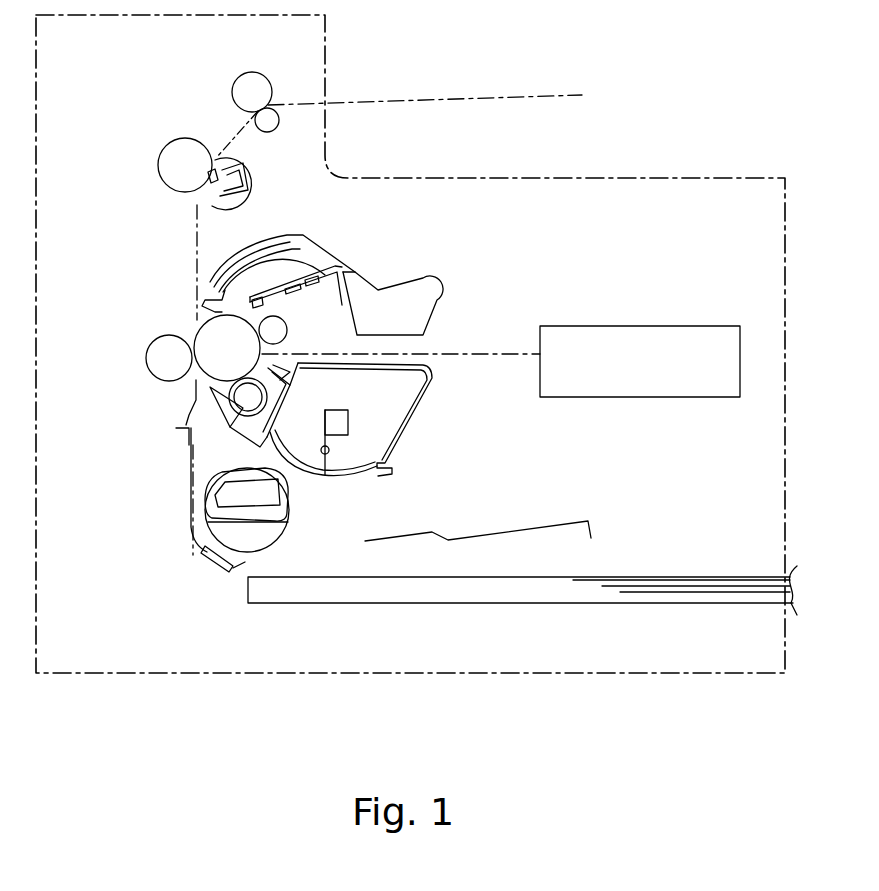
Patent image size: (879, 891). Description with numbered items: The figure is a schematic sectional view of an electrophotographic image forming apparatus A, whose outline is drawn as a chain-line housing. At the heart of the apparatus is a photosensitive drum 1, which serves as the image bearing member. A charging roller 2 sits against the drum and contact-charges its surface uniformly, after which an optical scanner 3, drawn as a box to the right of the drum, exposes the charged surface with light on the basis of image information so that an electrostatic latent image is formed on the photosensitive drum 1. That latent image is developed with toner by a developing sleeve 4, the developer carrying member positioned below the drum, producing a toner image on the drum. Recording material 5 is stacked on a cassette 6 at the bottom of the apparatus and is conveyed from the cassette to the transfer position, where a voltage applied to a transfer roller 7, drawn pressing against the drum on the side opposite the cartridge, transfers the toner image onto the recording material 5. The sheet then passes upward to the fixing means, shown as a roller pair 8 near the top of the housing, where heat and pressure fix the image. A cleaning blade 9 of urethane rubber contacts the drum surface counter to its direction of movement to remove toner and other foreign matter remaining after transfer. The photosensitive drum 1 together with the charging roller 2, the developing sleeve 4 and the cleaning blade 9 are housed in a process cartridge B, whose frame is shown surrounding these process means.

The electrophotographic image forming apparatus A is at (389, 52).
The process cartridge B is at (292, 338).
The photosensitive drum 1 is at (200, 324).
The charging roller 2 is at (287, 323).
The optical scanner 3 is at (587, 340).
The developing sleeve 4 is at (245, 400).
The recording material 5 is at (658, 572).
The cassette 6 is at (560, 608).
The transfer roller 7 is at (147, 362).
The fixing roller 8 is at (182, 143).
The cleaning blade 9 is at (285, 298).